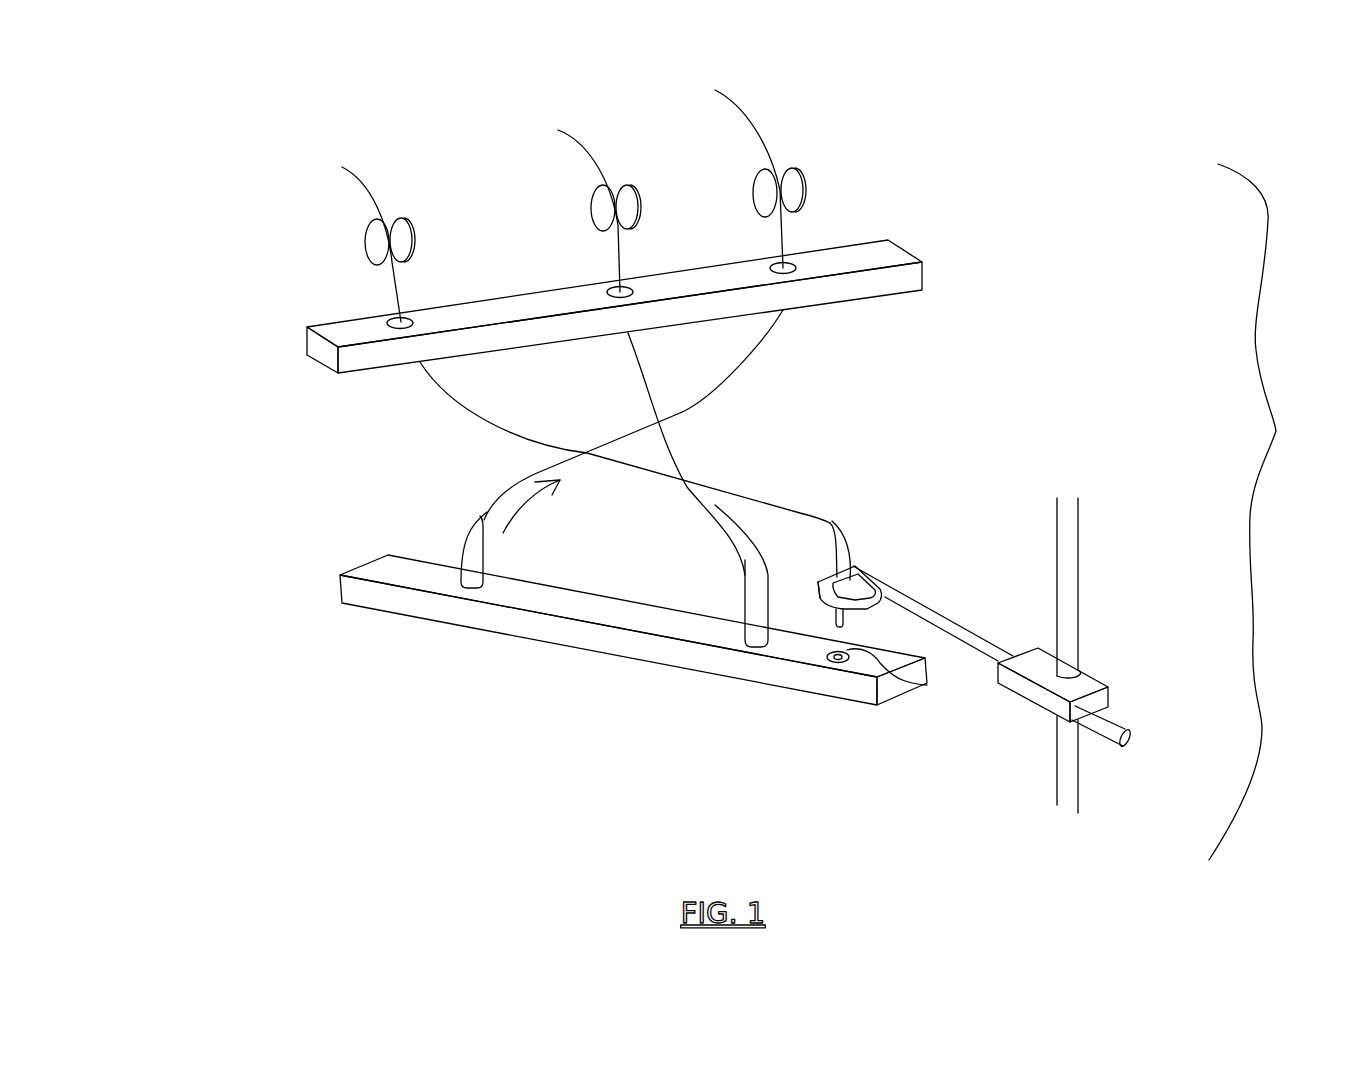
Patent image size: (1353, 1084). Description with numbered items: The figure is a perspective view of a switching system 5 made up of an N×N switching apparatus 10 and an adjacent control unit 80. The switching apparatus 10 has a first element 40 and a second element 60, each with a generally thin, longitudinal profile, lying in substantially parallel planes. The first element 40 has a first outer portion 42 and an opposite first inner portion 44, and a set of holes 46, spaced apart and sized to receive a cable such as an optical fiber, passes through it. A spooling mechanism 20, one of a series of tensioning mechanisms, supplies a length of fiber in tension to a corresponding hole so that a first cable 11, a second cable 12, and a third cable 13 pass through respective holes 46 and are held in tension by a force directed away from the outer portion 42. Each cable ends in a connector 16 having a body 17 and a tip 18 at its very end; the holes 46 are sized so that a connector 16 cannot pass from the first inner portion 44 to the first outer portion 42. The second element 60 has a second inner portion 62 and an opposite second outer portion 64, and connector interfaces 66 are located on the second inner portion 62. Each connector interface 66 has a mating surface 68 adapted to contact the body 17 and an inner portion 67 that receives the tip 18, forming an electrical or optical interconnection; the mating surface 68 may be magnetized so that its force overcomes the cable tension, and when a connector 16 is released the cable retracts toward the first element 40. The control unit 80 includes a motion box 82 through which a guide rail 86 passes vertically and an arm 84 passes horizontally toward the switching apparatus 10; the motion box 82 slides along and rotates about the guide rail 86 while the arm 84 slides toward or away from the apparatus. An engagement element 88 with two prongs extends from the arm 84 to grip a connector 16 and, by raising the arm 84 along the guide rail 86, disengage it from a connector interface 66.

The switching system 5 is at (1265, 512).
The switching apparatus 10 is at (260, 130).
The first cable 11 is at (757, 344).
The second cable 12 is at (636, 358).
The third cable 13 is at (628, 405).
The connector 16 is at (844, 575).
The body 17 is at (823, 608).
The tip 18 is at (845, 618).
The spooling mechanism 20 is at (373, 243).
The first element 40 is at (669, 338).
The first outer portion 42 is at (507, 308).
The first inner portion 44 is at (381, 368).
The set of holes 46 is at (390, 323).
The second element 60 is at (677, 668).
The second inner portion 62 is at (676, 608).
The second outer portion 64 is at (648, 662).
The connector interface 66 is at (465, 595).
The inner portion 67 is at (927, 685).
The mating surface 68 is at (827, 660).
The control unit 80 is at (1024, 691).
The motion box 82 is at (1108, 690).
The arm 84 is at (1132, 737).
The guide rail 86 is at (1068, 538).
The engagement element 88 is at (878, 579).